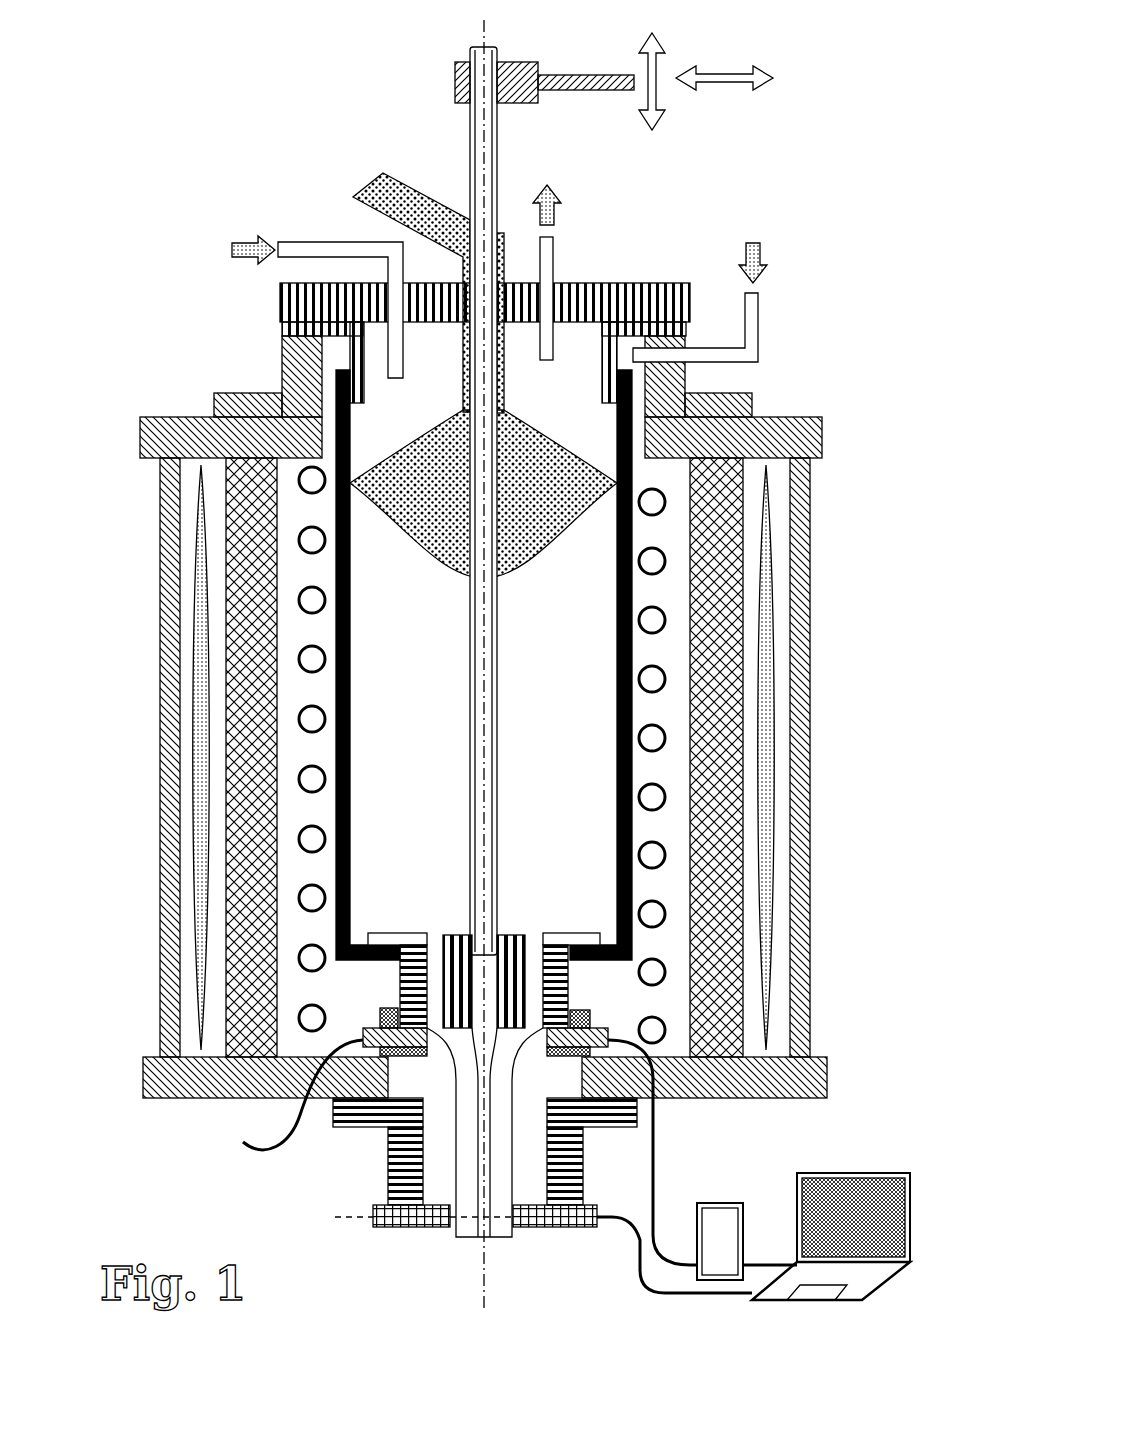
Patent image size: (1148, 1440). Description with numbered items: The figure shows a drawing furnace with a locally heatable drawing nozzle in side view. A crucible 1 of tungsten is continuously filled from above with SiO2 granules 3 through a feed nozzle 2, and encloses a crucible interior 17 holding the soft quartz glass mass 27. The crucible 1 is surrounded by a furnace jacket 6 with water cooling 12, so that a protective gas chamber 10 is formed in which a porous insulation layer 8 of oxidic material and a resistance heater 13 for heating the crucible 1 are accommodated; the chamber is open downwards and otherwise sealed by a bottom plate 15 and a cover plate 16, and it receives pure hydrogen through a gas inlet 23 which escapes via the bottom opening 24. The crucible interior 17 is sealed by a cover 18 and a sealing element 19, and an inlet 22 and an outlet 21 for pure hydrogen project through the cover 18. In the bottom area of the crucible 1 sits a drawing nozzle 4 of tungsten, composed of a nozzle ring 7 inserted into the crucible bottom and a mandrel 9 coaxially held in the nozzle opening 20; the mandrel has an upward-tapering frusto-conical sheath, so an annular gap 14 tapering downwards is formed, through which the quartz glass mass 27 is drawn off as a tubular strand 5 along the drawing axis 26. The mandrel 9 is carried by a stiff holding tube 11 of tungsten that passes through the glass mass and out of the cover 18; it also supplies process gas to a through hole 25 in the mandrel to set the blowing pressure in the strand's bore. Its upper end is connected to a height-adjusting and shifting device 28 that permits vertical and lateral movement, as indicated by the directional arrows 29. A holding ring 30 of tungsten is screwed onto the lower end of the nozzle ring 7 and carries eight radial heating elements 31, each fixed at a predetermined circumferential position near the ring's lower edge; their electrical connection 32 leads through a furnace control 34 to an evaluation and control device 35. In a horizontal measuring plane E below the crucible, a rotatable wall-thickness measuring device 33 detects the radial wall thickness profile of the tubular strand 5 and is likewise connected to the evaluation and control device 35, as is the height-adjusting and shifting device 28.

The crucible 1 is at (160, 808).
The feed nozzle 2 is at (415, 205).
The SiO2 granules 3 is at (555, 487).
The drawing nozzle 4 is at (580, 986).
The tubular strand 5 is at (502, 1228).
The furnace jacket 6 is at (793, 552).
The nozzle ring 7 is at (400, 1002).
The porous insulation layer 8 is at (720, 620).
The mandrel 9 is at (453, 982).
The protective gas chamber 10 is at (677, 518).
The holding tube 11 is at (482, 212).
The water cooling 12 is at (768, 772).
The resistance heater 13 is at (299, 657).
The annular gap 14 is at (433, 926).
The bottom plate 15 is at (183, 1098).
The cover plate 16 is at (258, 443).
The crucible interior 17 is at (448, 363).
The cover 18 is at (637, 297).
The sealing element 19 is at (282, 323).
The nozzle opening 20 is at (515, 912).
The outlet 21 is at (543, 263).
The inlet 22 is at (307, 252).
The gas inlet 23 is at (753, 332).
The bottom opening 24 is at (437, 1072).
The through hole 25 is at (488, 1078).
The drawing axis 26 is at (482, 1253).
The quartz glass mass 27 is at (426, 637).
The height-adjusting and shifting device 28 is at (523, 65).
The directional arrows 29 is at (727, 72).
The holding ring 30 is at (590, 1012).
The heating element 31 is at (608, 1030).
The electrical connection 32 is at (243, 1143).
The wall-thickness measuring device 33 is at (372, 1225).
The furnace control 34 is at (727, 1223).
The evaluation and control device 35 is at (822, 1190).